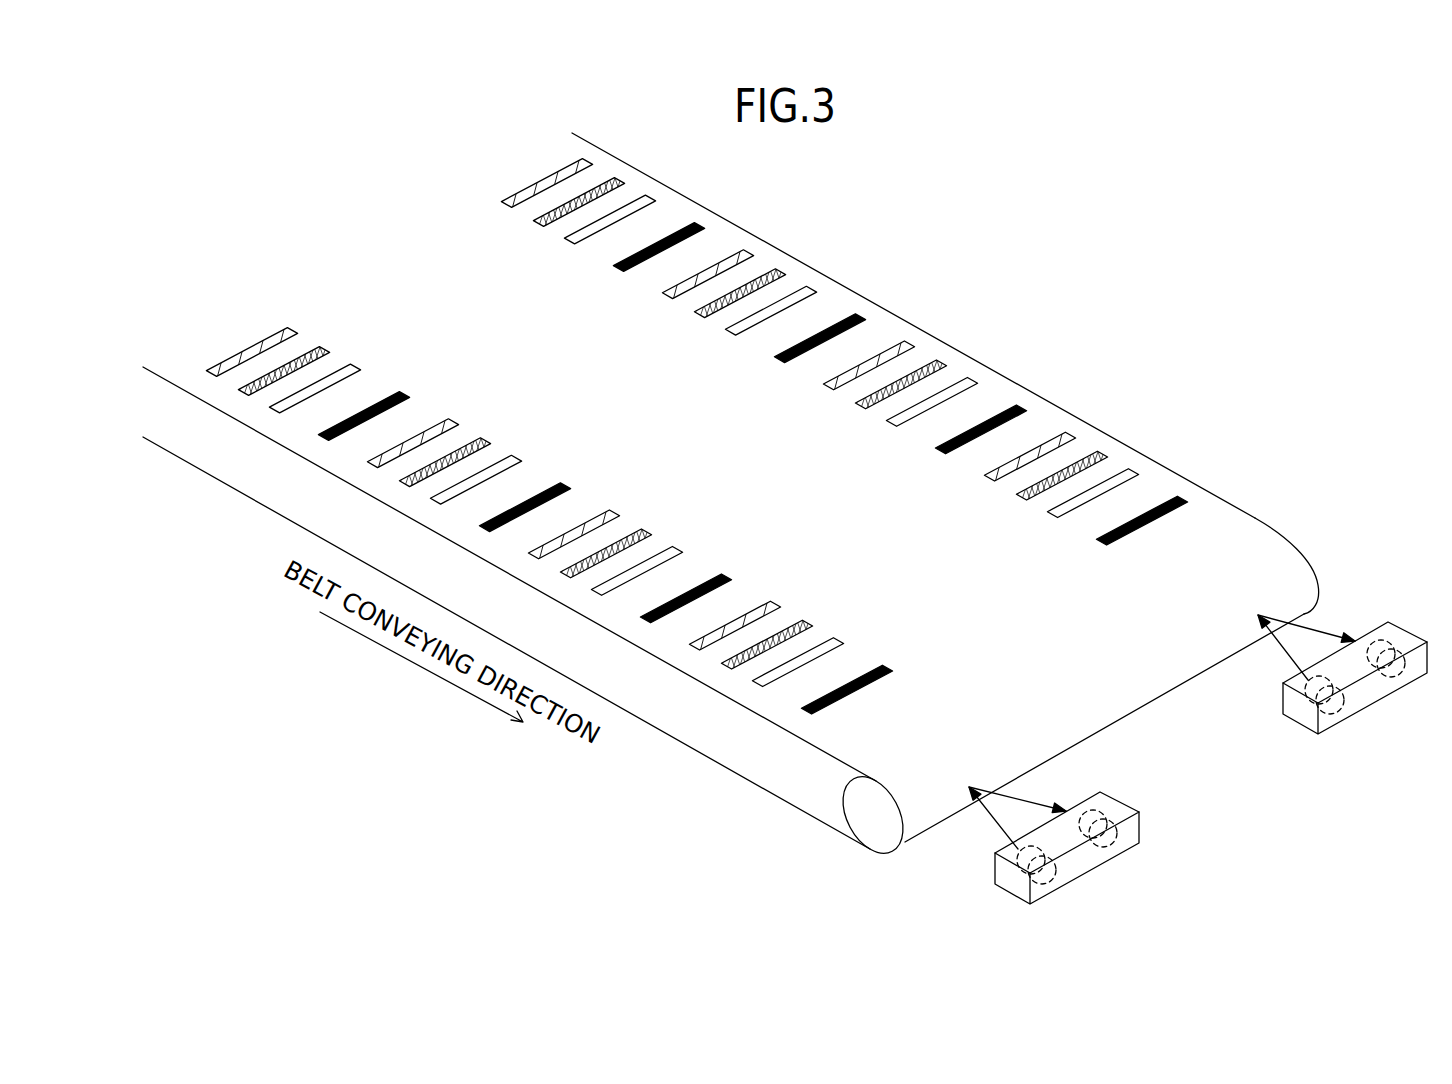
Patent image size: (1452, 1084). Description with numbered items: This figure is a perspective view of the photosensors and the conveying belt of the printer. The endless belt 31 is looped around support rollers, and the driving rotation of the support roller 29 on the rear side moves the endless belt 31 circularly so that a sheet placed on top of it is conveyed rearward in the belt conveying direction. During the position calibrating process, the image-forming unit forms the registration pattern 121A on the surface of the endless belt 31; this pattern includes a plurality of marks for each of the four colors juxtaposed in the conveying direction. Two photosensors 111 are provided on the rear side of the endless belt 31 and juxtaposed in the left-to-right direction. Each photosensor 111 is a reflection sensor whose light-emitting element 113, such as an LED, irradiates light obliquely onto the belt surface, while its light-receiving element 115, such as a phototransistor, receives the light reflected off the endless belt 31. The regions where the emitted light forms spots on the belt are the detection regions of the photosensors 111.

The support roller 29 is at (870, 823).
The endless belt 31 is at (1258, 545).
The photosensor 111 is at (1115, 808).
The light-emitting element 113 is at (1056, 882).
The light-receiving element 115 is at (1119, 846).
The registration pattern 121A is at (770, 588).